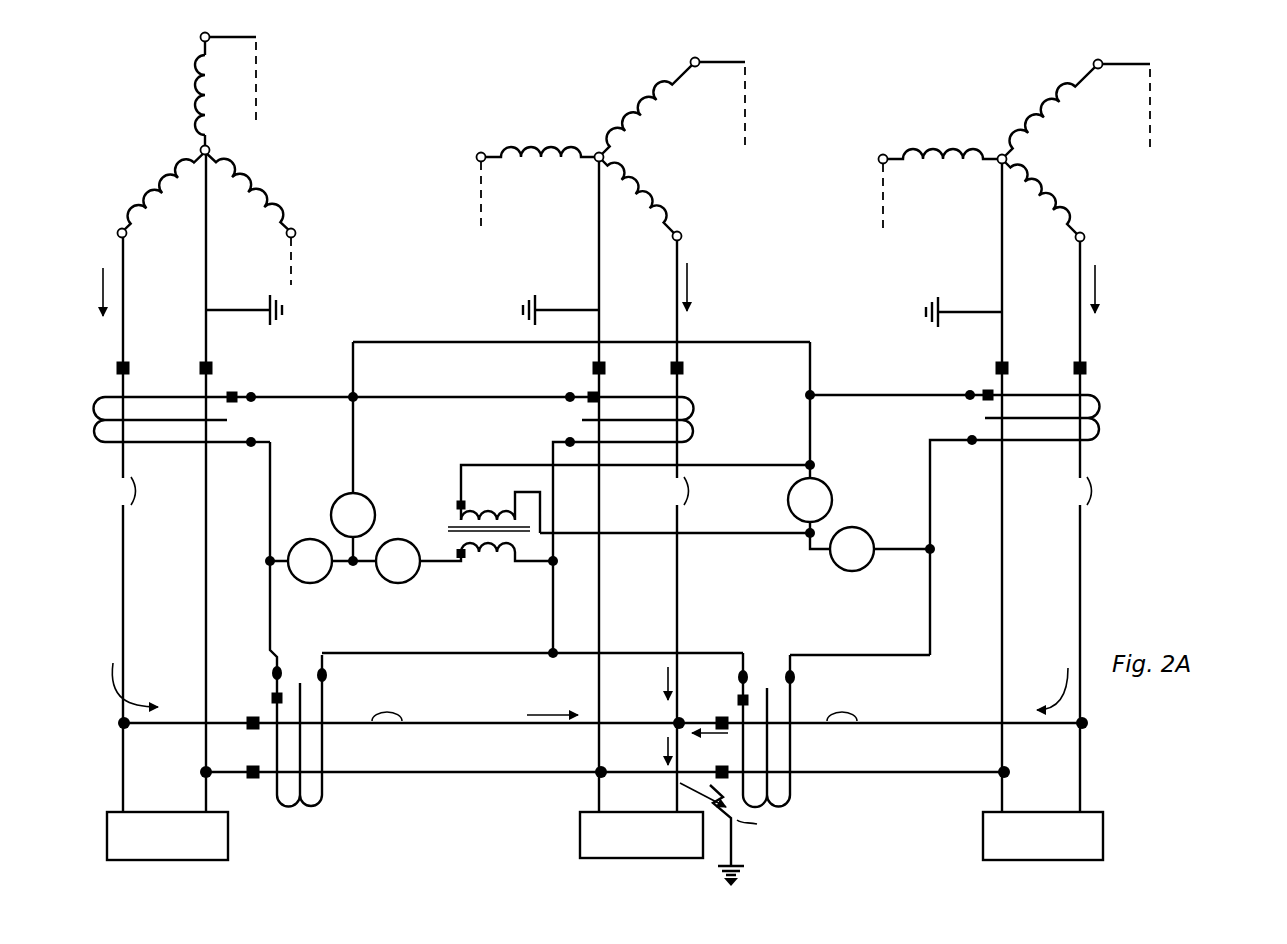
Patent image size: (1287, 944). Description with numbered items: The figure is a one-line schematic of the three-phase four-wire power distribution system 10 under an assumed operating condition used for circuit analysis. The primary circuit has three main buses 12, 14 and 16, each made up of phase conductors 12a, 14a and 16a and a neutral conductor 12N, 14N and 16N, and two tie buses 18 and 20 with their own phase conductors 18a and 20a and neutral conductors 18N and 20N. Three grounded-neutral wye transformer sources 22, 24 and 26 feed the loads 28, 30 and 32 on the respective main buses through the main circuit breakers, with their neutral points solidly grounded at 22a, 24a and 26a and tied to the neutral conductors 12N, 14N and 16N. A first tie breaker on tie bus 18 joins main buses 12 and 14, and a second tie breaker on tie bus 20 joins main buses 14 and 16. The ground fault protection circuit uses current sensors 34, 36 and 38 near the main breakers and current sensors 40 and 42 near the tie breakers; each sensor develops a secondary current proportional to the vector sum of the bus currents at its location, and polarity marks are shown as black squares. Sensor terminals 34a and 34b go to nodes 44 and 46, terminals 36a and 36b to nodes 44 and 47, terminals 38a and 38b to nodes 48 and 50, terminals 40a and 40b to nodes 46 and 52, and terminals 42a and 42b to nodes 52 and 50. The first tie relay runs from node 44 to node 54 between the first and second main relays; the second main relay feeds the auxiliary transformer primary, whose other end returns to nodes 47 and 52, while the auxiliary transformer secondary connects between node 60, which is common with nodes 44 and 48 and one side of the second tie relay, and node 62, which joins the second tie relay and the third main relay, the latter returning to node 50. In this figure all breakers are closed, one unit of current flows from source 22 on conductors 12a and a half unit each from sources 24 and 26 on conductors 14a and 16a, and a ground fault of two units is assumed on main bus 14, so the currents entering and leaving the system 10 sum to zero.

The power distribution system 10 is at (862, 51).
The main bus 12 is at (182, 616).
The phase conductors of main bus 12 12a is at (122, 597).
The neutral conductor of main bus 12 12N is at (208, 268).
The main bus 14 is at (654, 606).
The phase conductors of main bus 14 14a is at (679, 566).
The neutral conductor of main bus 14 14N is at (599, 218).
The main bus 16 is at (1057, 632).
The phase conductors of main bus 16 16a is at (1081, 560).
The neutral conductor of main bus 16 16N is at (1002, 550).
The tie bus 18 is at (505, 757).
The phase conductors of tie bus 18 18a is at (483, 721).
The neutral conductor of tie bus 18 18N is at (420, 773).
The tie bus 20 is at (930, 757).
The phase conductors of tie bus 20 20a is at (940, 721).
The neutral conductor of tie bus 20 20N is at (893, 773).
The transformer source 22 is at (152, 116).
The ground of source 22 22a is at (287, 312).
The transformer source 24 is at (584, 117).
The ground of source 24 24a is at (519, 312).
The transformer source 26 is at (997, 127).
The ground of source 26 26a is at (923, 313).
The load 28 is at (107, 830).
The load 30 is at (580, 832).
The load 32 is at (1105, 820).
The current sensor 34 is at (100, 403).
The terminal of current sensor 34 34a is at (251, 394).
The terminal of current sensor 34 34b is at (256, 440).
The current sensor 36 is at (690, 398).
The terminal of current sensor 36 36a is at (570, 394).
The terminal of current sensor 36 36b is at (568, 440).
The current sensor 38 is at (1089, 397).
The terminal of current sensor 38 38a is at (970, 393).
The terminal of current sensor 38 38b is at (972, 447).
The current sensor 40 is at (310, 803).
The terminal of current sensor 40 40a is at (281, 670).
The terminal of current sensor 40 40b is at (327, 676).
The current sensor 42 is at (790, 803).
The terminal of current sensor 42 42a is at (741, 677).
The terminal of current sensor 42 42b is at (788, 673).
The node 44 is at (353, 394).
The node 46 is at (270, 558).
The node 47 is at (551, 565).
The node 48 is at (809, 395).
The node 50 is at (930, 552).
The node 52 is at (550, 652).
The node 54 is at (355, 566).
The node 60 is at (809, 464).
The node 62 is at (810, 538).